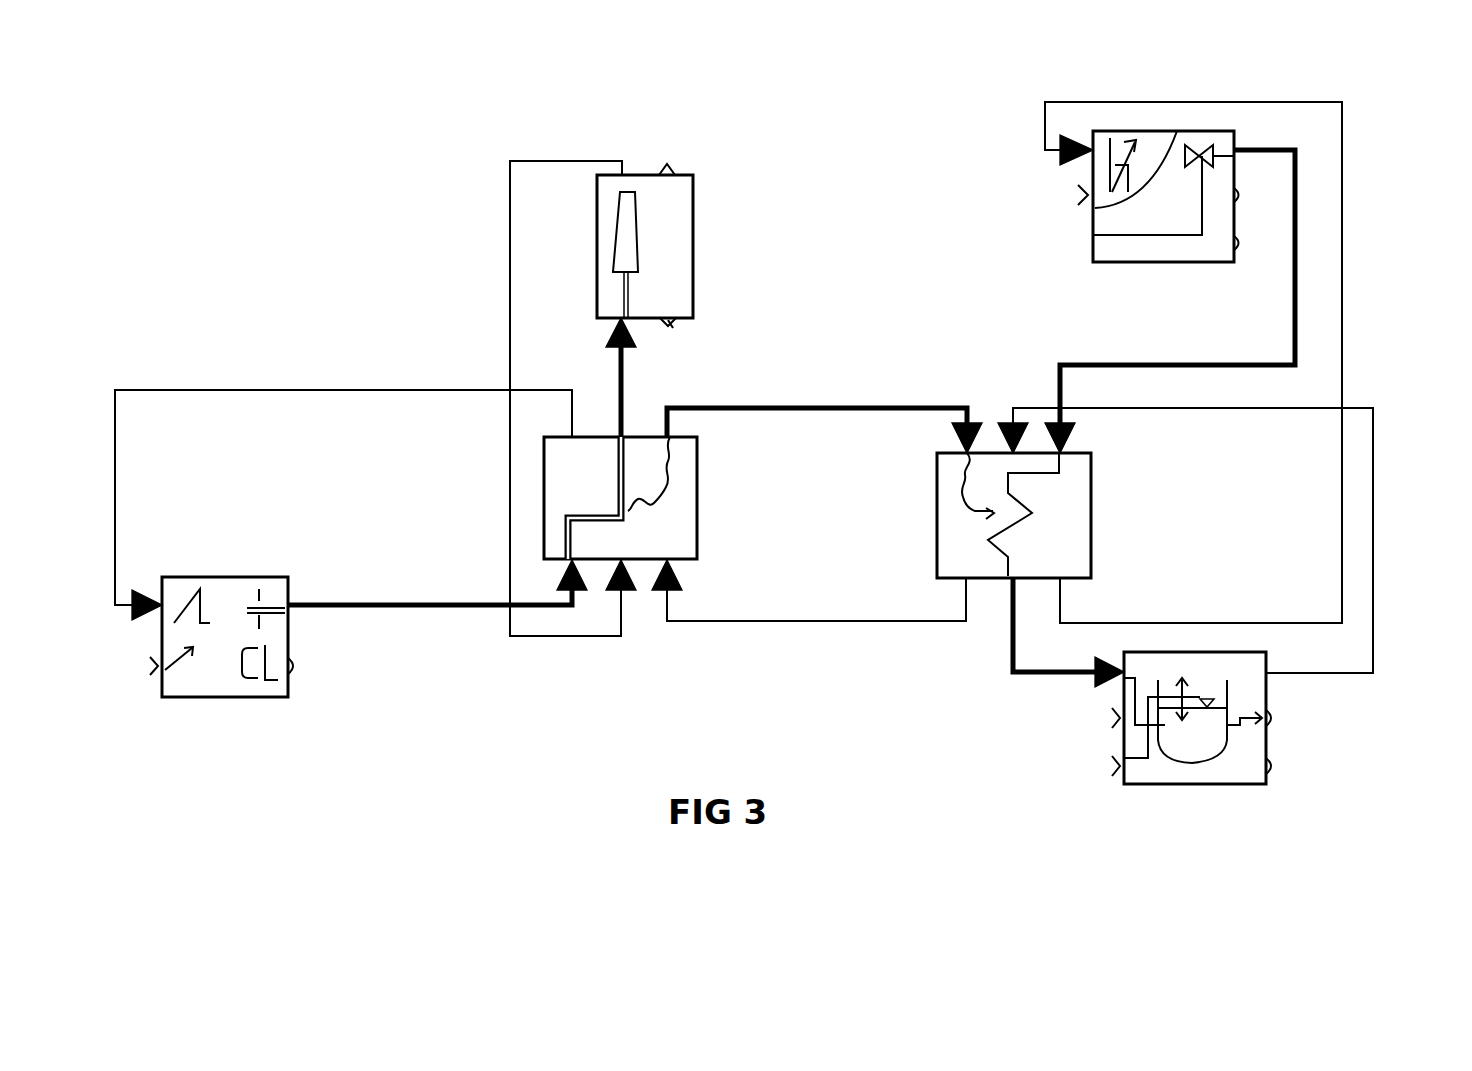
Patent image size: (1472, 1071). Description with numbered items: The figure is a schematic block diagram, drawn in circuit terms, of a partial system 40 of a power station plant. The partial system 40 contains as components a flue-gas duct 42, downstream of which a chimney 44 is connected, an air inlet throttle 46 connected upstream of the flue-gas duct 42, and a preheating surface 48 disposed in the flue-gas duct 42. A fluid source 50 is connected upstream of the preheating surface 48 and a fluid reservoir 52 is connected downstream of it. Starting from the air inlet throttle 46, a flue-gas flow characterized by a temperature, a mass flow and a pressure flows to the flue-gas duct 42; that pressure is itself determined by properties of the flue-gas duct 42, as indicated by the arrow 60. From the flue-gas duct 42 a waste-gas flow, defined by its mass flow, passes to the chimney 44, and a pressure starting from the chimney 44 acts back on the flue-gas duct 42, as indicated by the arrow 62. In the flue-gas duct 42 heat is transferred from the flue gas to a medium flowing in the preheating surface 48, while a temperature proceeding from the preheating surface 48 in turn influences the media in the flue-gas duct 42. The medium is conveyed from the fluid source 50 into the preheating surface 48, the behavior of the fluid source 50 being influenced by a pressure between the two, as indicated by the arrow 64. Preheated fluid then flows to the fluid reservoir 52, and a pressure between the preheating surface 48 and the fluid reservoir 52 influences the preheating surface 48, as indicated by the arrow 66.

The partial system 40 is at (1310, 868).
The flue-gas duct 42 is at (697, 508).
The chimney 44 is at (693, 237).
The air inlet throttle 46 is at (218, 697).
The preheating surface 48 is at (1091, 520).
The fluid source 50 is at (1165, 262).
The fluid reservoir 52 is at (1266, 738).
The arrow 60 is at (170, 390).
The arrow 62 is at (510, 236).
The arrow 64 is at (1342, 205).
The arrow 66 is at (1373, 550).